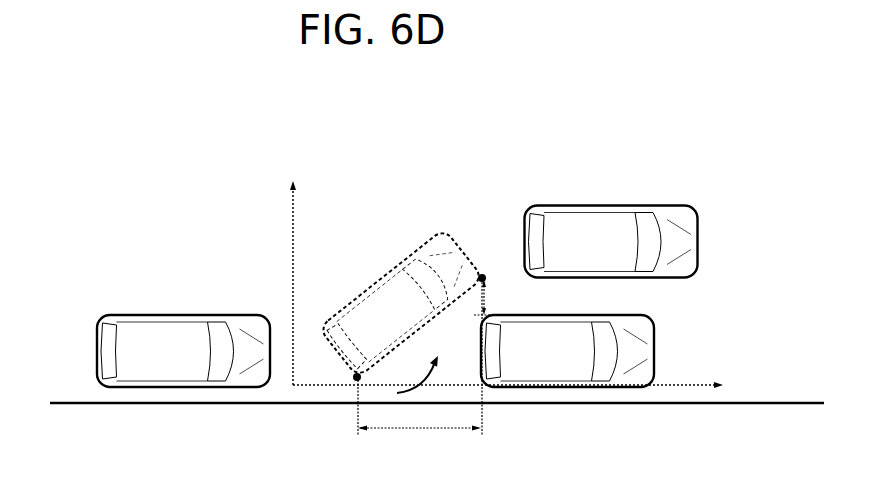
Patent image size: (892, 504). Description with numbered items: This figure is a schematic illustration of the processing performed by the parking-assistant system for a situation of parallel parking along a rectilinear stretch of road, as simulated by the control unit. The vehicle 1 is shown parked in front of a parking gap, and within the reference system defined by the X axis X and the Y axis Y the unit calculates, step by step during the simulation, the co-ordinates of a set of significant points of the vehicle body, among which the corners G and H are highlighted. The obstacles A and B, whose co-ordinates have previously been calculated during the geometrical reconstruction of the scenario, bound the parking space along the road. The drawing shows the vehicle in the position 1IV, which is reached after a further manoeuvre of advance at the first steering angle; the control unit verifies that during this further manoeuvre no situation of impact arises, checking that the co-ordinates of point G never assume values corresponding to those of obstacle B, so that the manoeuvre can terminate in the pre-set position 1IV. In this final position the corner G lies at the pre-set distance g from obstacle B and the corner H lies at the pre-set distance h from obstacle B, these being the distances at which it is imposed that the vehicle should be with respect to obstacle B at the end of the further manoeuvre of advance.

The vehicle 1 is at (611, 242).
The vehicle position 1IV is at (401, 311).
The obstacle A is at (183, 351).
The obstacle B is at (567, 351).
The point G is at (483, 277).
The point H is at (357, 378).
The pre-set distance g is at (485, 299).
The pre-set distance h is at (416, 428).
The X axis X is at (523, 382).
The Y axis Y is at (281, 272).